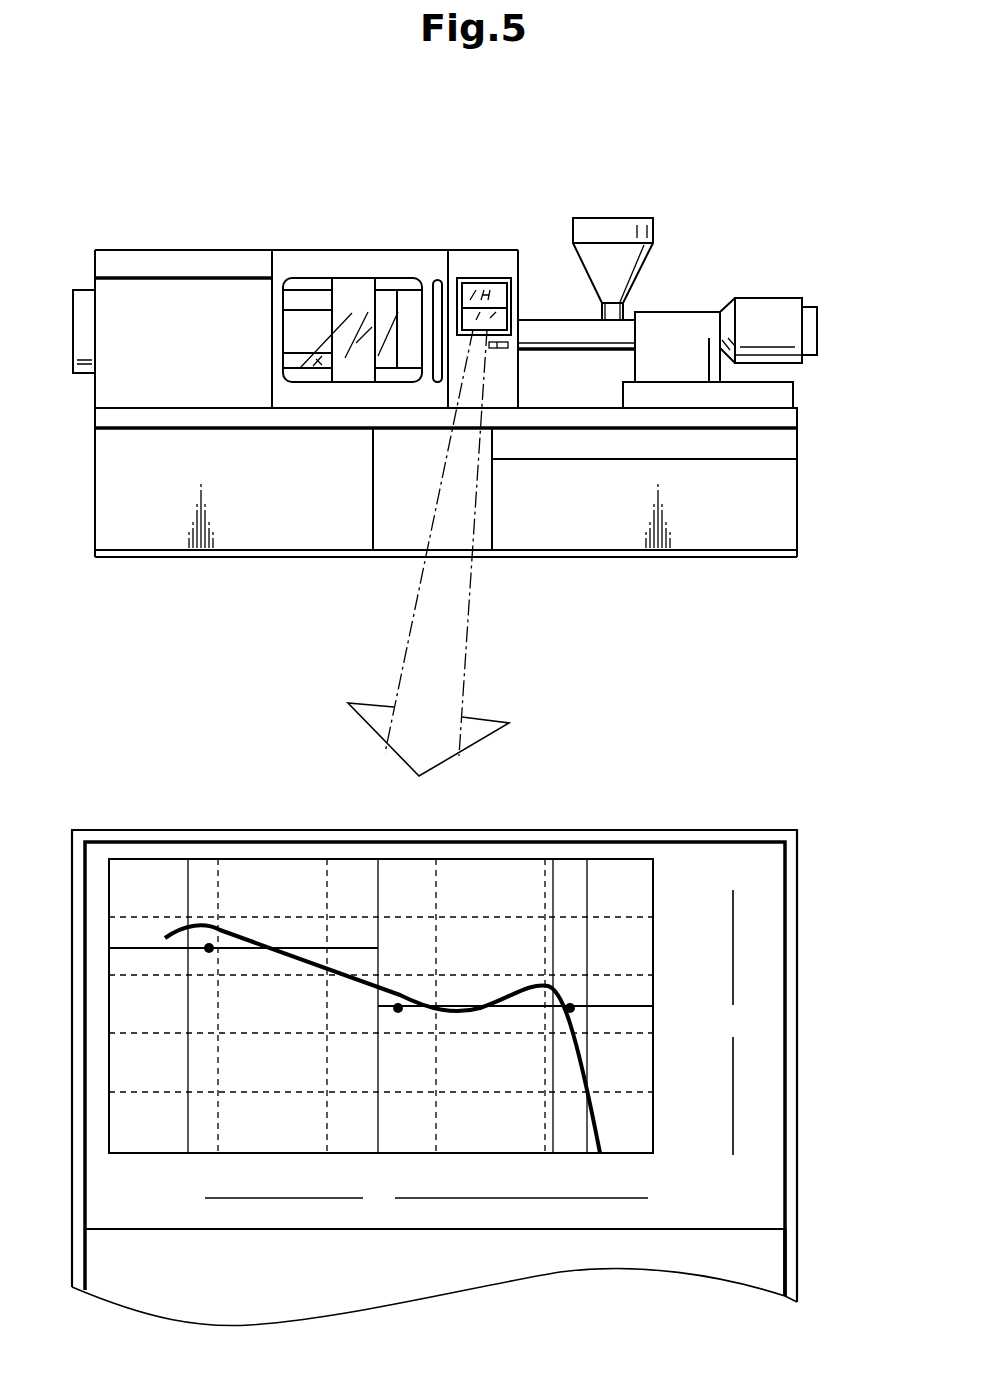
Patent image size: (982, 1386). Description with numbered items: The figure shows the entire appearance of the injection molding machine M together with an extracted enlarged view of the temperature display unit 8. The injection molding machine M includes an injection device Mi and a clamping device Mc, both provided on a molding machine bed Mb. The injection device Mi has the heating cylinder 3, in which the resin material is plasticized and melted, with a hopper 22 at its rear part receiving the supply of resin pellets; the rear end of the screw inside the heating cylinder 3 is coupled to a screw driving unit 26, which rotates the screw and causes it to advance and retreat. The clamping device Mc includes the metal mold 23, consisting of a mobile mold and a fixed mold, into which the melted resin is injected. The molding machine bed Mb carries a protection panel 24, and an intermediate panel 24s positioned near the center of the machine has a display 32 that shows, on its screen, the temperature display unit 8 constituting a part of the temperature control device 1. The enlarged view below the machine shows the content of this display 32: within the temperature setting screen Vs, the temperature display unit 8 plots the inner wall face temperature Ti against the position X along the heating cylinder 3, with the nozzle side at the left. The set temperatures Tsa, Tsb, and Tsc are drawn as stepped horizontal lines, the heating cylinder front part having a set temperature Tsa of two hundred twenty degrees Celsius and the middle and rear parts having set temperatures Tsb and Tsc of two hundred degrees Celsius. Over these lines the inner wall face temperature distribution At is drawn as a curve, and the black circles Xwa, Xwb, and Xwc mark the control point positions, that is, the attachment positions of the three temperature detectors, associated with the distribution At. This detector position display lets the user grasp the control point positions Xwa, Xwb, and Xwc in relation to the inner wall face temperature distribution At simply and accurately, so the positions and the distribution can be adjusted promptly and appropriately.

The injection molding machine M is at (684, 166).
The clamping device Mc is at (260, 227).
The injection device Mi is at (710, 260).
The molding machine bed Mb is at (560, 408).
The protection panel 24 is at (327, 247).
The metal mold 23 is at (398, 286).
The intermediate panel 24s is at (468, 249).
The temperature control device 1 is at (555, 316).
The heating cylinder 3 is at (538, 360).
The hopper 22 is at (607, 217).
The screw driving unit 26 is at (787, 297).
The display 32 is at (457, 318).
The temperature display unit 8 is at (766, 915).
The temperature setting screen Vs is at (792, 1265).
The set temperature Tsa is at (311, 947).
The set temperature Tsb is at (520, 1011).
The set temperature Tsc is at (592, 1006).
The control point position Xwa is at (208, 953).
The control point position Xwb is at (400, 1013).
The control point position Xwc is at (573, 1012).
The inner wall face temperature distribution At is at (308, 967).
The inner wall face temperature Ti is at (728, 1022).
The position axis X is at (426, 1200).